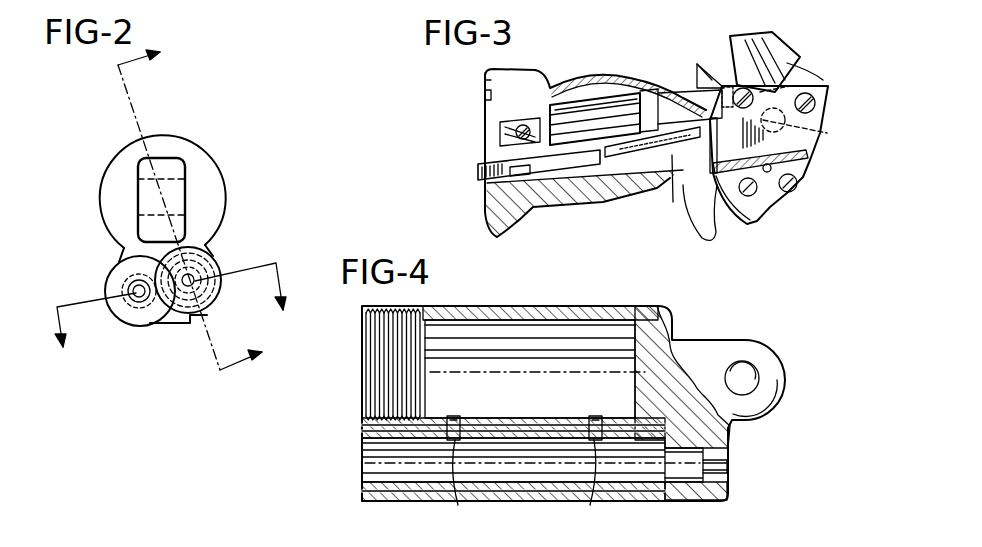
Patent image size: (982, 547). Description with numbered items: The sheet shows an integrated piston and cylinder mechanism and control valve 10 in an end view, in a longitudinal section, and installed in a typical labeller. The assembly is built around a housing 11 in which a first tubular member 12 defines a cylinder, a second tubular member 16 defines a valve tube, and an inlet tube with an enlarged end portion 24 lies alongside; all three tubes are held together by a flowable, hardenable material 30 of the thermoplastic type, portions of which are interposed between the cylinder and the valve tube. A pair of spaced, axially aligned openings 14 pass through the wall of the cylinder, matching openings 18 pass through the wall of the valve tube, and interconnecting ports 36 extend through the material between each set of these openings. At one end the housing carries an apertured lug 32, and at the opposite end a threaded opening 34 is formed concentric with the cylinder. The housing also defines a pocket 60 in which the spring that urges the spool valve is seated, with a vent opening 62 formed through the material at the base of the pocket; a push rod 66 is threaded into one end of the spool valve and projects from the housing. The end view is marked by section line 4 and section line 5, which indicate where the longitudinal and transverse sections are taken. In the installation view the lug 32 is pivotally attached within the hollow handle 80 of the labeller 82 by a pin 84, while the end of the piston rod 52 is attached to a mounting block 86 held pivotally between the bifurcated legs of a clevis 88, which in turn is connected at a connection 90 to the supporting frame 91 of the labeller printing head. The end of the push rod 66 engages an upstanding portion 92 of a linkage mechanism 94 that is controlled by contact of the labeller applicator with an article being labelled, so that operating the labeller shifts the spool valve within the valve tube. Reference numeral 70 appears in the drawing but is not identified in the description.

In FIG. 2, the section line 4— 4 is at (180, 221).
In FIG. 2, the section line 5— 5 is at (165, 294).
In FIG. 2, the integrated piston and cylinder mechanism and control valve 10 is at (198, 140).
In FIG. 2, the housing 11 is at (123, 160).
In FIG. 4, the housing 11 is at (538, 308).
In FIG. 4, the first tubular member 12 is at (578, 320).
In FIG. 4, the openings 14 is at (452, 416).
In FIG. 4, the second tubular member 16 is at (403, 493).
In FIG. 4, the openings 18 is at (523, 490).
In FIG. 2, the enlarged end portion 24 is at (148, 316).
In FIG. 2, the flowable, hardenable material 30 is at (215, 262).
In FIG. 4, the flowable, hardenable material 30 is at (727, 487).
In FIG. 2, the apertured lug 32 is at (145, 203).
In FIG. 3, the apertured lug 32 is at (540, 120).
In FIG. 4, the apertured lug 32 is at (737, 353).
In FIG. 4, the threaded opening 34 is at (372, 388).
In FIG. 4, the interconnecting ports 36 is at (470, 418).
In FIG. 3, the piston rod 52 is at (668, 108).
In FIG. 4, the pocket 60 is at (697, 481).
In FIG. 2, the vent opening 62 is at (195, 283).
In FIG. 4, the vent opening 62 is at (727, 467).
In FIG. 3, the push rod 66 is at (672, 160).
In FIG. 2, the pivot hole 70 is at (138, 296).
In FIG. 3, the hollow handle 80 is at (596, 78).
In FIG. 3, the labeller 82 is at (780, 210).
In FIG. 3, the pin 84 is at (498, 134).
In FIG. 3, the mounting block 86 is at (733, 87).
In FIG. 3, the clevis 88 is at (790, 80).
In FIG. 3, the connection 90 is at (822, 137).
In FIG. 3, the supporting frame 91 is at (828, 100).
In FIG. 3, the upstanding portion 92 is at (712, 138).
In FIG. 3, the linkage mechanism 94 is at (806, 164).